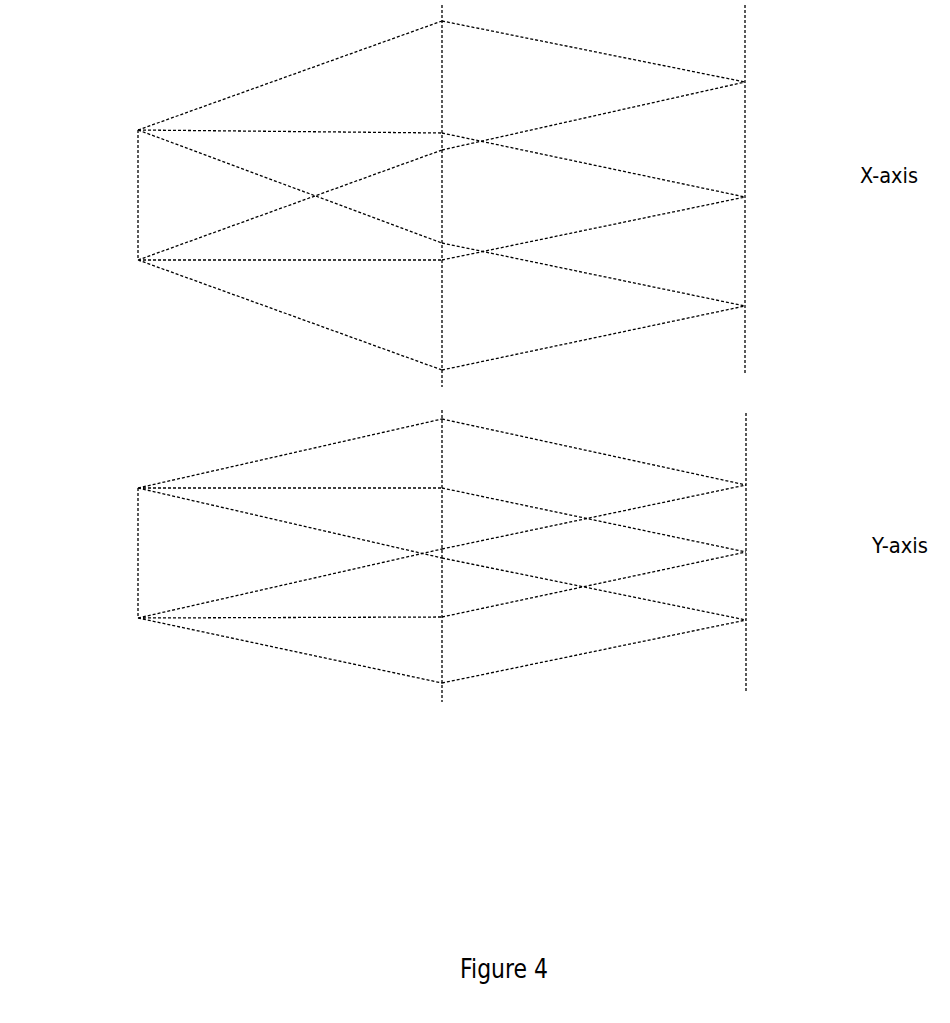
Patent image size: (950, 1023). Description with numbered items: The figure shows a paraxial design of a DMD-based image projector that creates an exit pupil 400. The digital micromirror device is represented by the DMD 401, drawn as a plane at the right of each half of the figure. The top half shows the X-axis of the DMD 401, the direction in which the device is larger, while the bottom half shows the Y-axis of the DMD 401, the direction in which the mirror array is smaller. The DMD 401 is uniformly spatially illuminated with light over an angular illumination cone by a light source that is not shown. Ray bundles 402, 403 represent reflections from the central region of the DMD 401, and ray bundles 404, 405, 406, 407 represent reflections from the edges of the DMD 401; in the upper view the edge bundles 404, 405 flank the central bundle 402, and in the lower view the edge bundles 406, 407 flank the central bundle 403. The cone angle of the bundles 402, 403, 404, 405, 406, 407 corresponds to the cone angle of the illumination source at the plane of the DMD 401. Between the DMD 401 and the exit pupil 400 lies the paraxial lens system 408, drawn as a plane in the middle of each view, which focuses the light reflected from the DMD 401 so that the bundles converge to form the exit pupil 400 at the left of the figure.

The exit pupil 400 is at (136, 226).
The DMD 401 is at (753, 431).
The ray bundle 402 is at (684, 197).
The ray bundle 403 is at (708, 554).
The ray bundle 404 is at (698, 82).
The ray bundle 405 is at (677, 313).
The ray bundle 406 is at (676, 487).
The ray bundle 407 is at (706, 620).
The paraxial lens system 408 is at (437, 379).